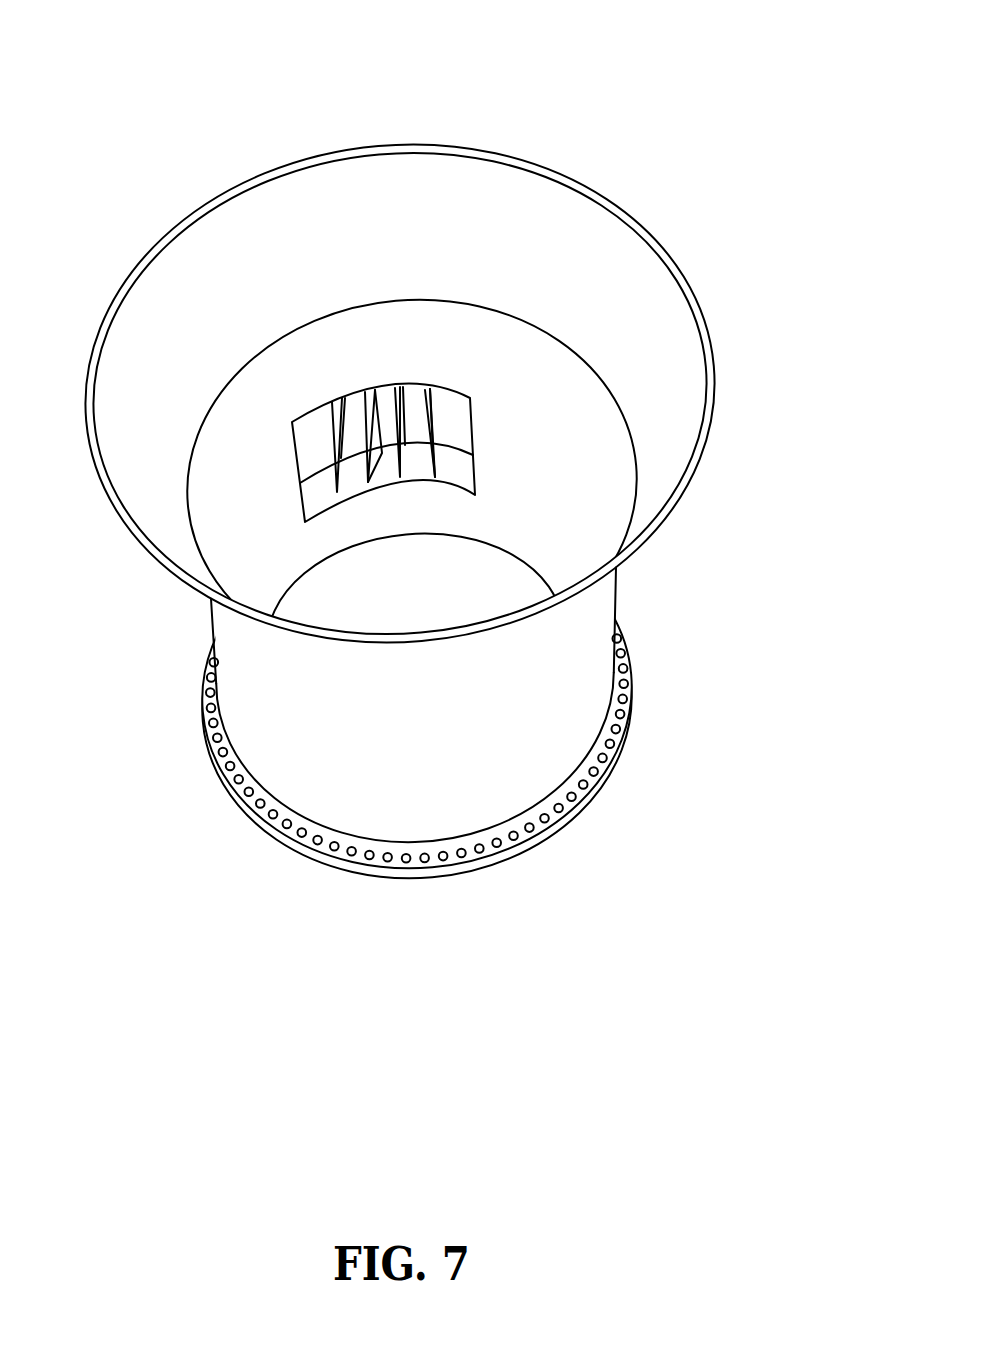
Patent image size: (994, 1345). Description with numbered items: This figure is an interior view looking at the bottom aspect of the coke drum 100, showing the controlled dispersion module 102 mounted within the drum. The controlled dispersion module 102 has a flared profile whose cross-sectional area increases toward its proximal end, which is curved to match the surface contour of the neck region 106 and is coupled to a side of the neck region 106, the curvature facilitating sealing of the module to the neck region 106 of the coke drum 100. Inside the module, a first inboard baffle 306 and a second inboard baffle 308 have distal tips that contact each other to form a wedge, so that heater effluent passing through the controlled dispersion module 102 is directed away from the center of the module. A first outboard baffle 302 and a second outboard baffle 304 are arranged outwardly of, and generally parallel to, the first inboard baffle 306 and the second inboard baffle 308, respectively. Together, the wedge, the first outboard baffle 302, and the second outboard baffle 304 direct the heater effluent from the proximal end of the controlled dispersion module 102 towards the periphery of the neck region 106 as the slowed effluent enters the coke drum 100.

The coke drum 100 is at (425, 470).
The controlled dispersion module 102 is at (300, 504).
The neck region 106 is at (437, 762).
The first outboard baffle 302 is at (437, 457).
The second outboard baffle 304 is at (335, 475).
The first inboard baffle 306 is at (405, 462).
The second inboard baffle 308 is at (360, 463).